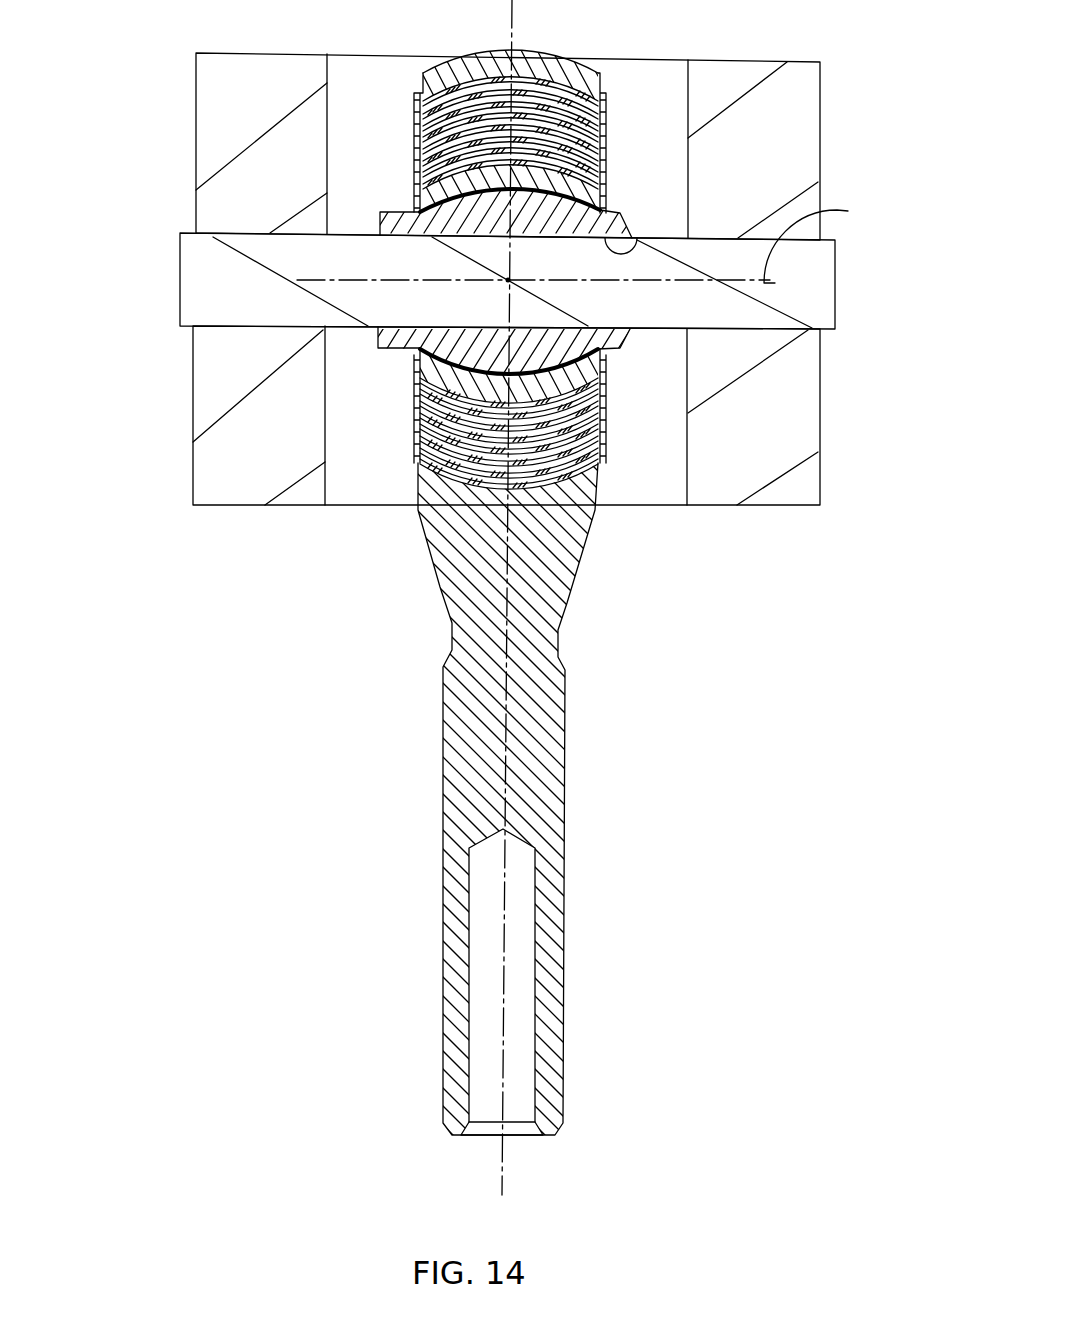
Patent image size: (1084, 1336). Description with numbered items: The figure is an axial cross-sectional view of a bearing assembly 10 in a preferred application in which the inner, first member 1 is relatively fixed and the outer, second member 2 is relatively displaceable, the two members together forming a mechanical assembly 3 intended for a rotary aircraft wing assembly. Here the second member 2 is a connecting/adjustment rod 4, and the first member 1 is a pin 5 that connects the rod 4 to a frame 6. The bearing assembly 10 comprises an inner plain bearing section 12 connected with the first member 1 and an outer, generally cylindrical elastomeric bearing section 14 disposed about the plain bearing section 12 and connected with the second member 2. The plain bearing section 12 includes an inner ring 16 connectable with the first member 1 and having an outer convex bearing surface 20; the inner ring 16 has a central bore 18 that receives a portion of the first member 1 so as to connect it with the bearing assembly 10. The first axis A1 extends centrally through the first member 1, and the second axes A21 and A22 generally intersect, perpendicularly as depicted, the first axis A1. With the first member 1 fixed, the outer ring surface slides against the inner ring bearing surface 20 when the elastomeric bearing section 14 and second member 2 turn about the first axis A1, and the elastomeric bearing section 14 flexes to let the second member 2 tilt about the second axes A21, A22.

The first member 1 is at (481, 576).
The second member 2 is at (508, 576).
The mechanical assembly 3 is at (481, 279).
The connecting/adjustment rod 4 is at (555, 742).
The pin 5 is at (822, 290).
The frame 6 is at (805, 163).
The bearing assembly 10 is at (388, 107).
The inner plain bearing section 12 is at (617, 355).
The elastomeric bearing section 14 is at (403, 447).
The inner ring 16 is at (395, 210).
The central bore 18 is at (637, 238).
The outer convex bearing surface 20 is at (563, 184).
The first axis A1 is at (817, 242).
The second axis A21 is at (512, 279).
The second axis A22 is at (515, 35).